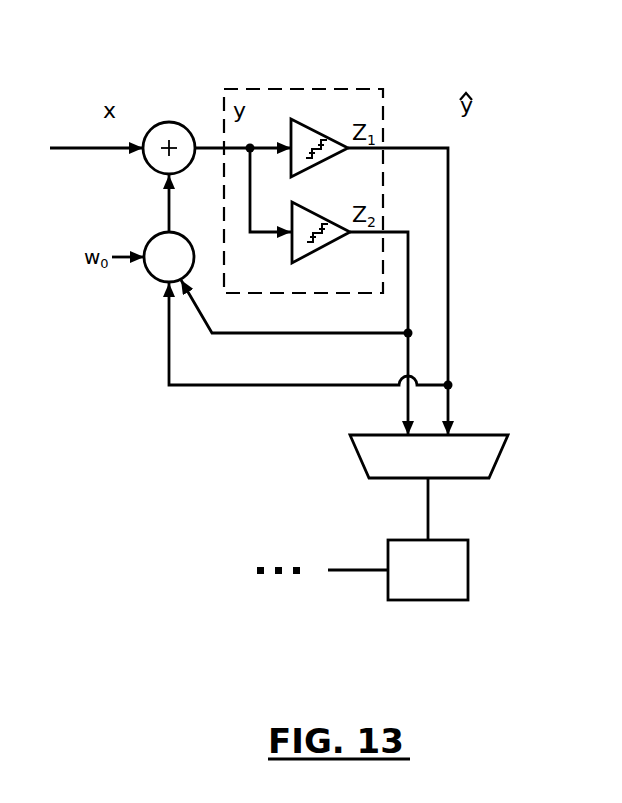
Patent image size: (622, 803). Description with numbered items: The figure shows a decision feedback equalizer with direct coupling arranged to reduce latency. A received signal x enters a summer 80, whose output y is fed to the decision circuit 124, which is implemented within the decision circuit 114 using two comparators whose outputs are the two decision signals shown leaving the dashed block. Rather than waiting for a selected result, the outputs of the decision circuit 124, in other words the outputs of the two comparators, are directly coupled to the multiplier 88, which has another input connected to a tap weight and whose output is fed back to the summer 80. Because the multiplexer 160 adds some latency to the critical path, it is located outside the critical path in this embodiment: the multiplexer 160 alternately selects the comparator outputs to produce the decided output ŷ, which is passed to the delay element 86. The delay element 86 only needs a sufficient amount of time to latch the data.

The summer / adder 80 is at (168, 123).
The multiplier 88 is at (151, 280).
The decision circuit 124 is at (325, 89).
The decision circuit 114 is at (383, 106).
The multiplexer 160 is at (503, 445).
The delay element 86 is at (468, 565).